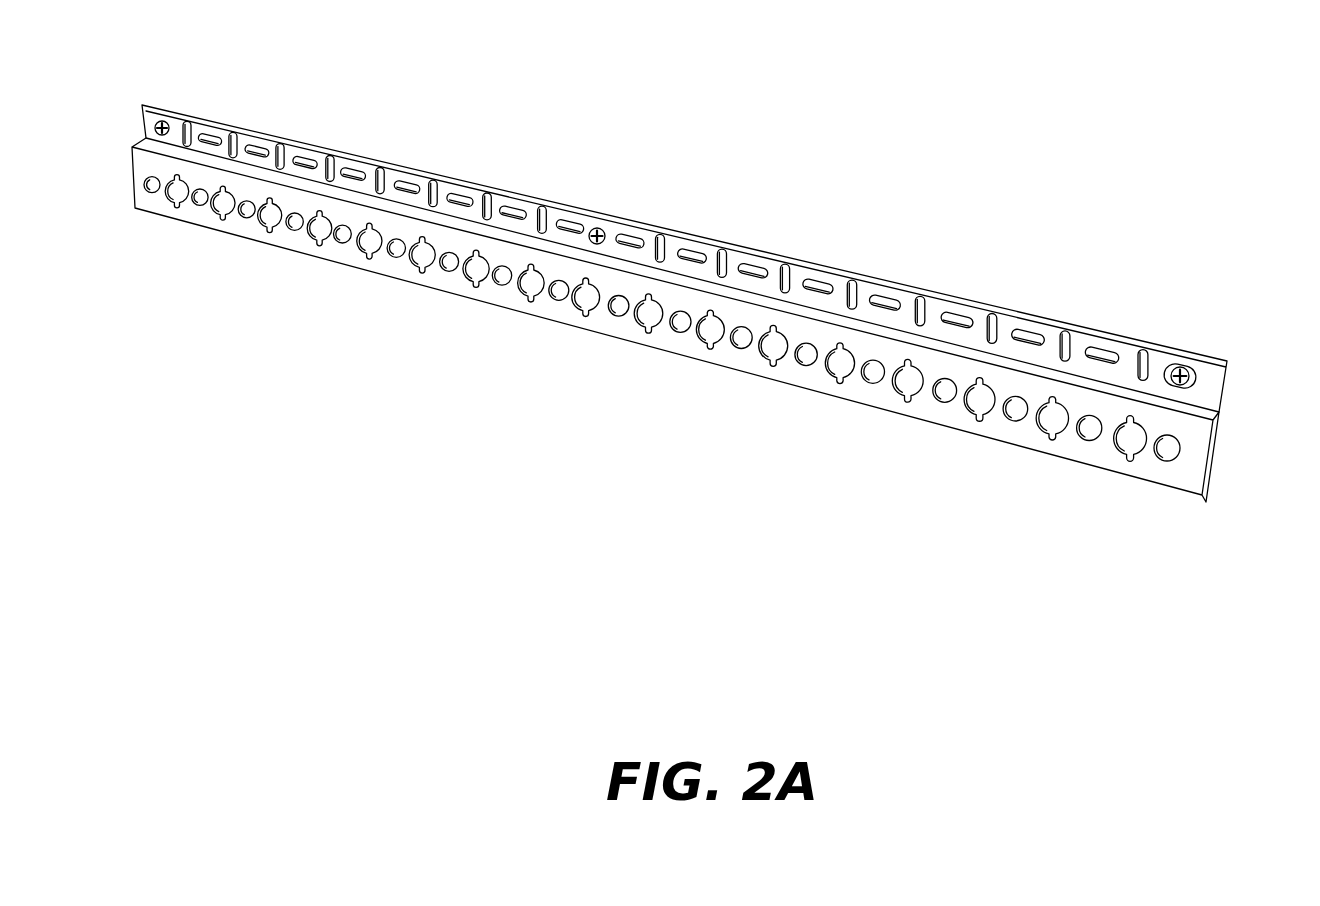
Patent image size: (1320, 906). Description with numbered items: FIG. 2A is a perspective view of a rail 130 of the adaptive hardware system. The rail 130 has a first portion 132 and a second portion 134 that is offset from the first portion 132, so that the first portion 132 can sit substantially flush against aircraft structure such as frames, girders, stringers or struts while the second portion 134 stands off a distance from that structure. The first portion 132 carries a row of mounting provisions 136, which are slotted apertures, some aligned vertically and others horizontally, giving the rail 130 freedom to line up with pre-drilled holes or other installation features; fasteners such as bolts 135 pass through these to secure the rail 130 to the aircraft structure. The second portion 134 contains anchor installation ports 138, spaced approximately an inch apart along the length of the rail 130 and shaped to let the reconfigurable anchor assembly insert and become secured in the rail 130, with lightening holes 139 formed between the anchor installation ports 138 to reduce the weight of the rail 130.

The rail 130 is at (429, 118).
The first portion 132 is at (551, 213).
The second portion 134 is at (1192, 438).
The bolt 135 is at (164, 123).
The mounting provision 136 is at (851, 293).
The anchor installation port 138 is at (414, 258).
The lightening hole 139 is at (942, 392).